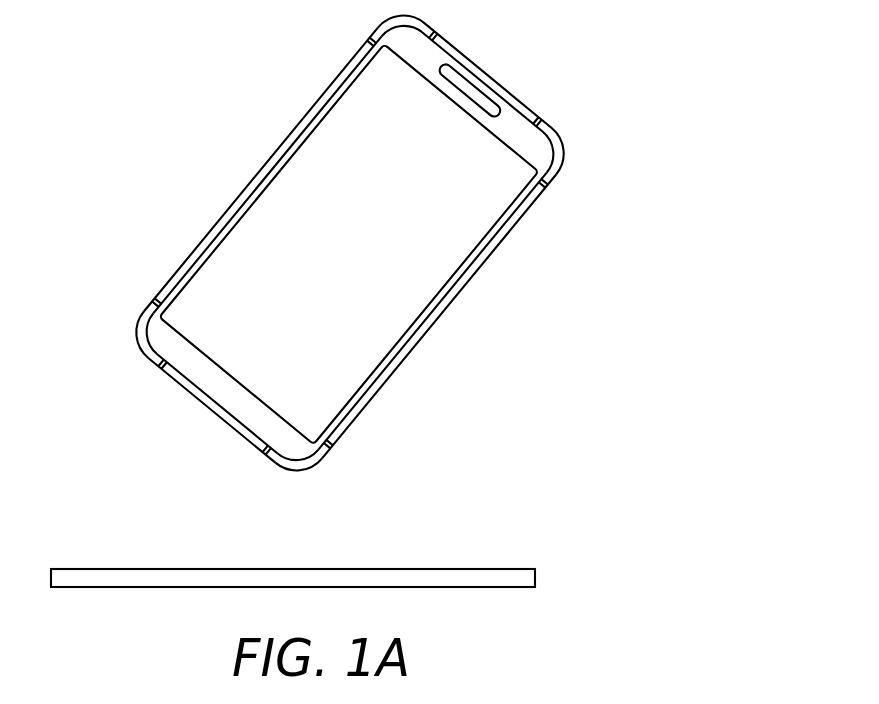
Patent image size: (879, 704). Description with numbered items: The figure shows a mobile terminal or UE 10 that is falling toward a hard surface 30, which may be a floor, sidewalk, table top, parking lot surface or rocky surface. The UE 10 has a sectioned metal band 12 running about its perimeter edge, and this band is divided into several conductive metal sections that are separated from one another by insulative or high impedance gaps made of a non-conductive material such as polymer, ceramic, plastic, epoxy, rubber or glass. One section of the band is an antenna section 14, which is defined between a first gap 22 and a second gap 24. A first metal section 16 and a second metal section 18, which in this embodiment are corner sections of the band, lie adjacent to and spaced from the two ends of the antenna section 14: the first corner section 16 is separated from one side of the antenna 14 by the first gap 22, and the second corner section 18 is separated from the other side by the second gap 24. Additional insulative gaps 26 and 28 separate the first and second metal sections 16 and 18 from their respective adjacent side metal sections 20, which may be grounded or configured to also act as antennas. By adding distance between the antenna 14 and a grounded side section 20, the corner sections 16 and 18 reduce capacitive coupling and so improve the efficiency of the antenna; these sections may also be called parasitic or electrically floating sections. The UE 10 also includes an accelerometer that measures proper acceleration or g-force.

The mobile terminal or UE 10 is at (380, 260).
The sectioned metal band 12 is at (507, 233).
The antenna section 14 is at (213, 413).
The first metal section 16 is at (140, 332).
The second metal section 18 is at (304, 466).
The side metal section 20 is at (283, 148).
The first gap 22 is at (153, 368).
The second gap 24 is at (267, 457).
The insulative gap 26 is at (154, 305).
The insulative gap 28 is at (328, 447).
The hard surface 30 is at (474, 569).